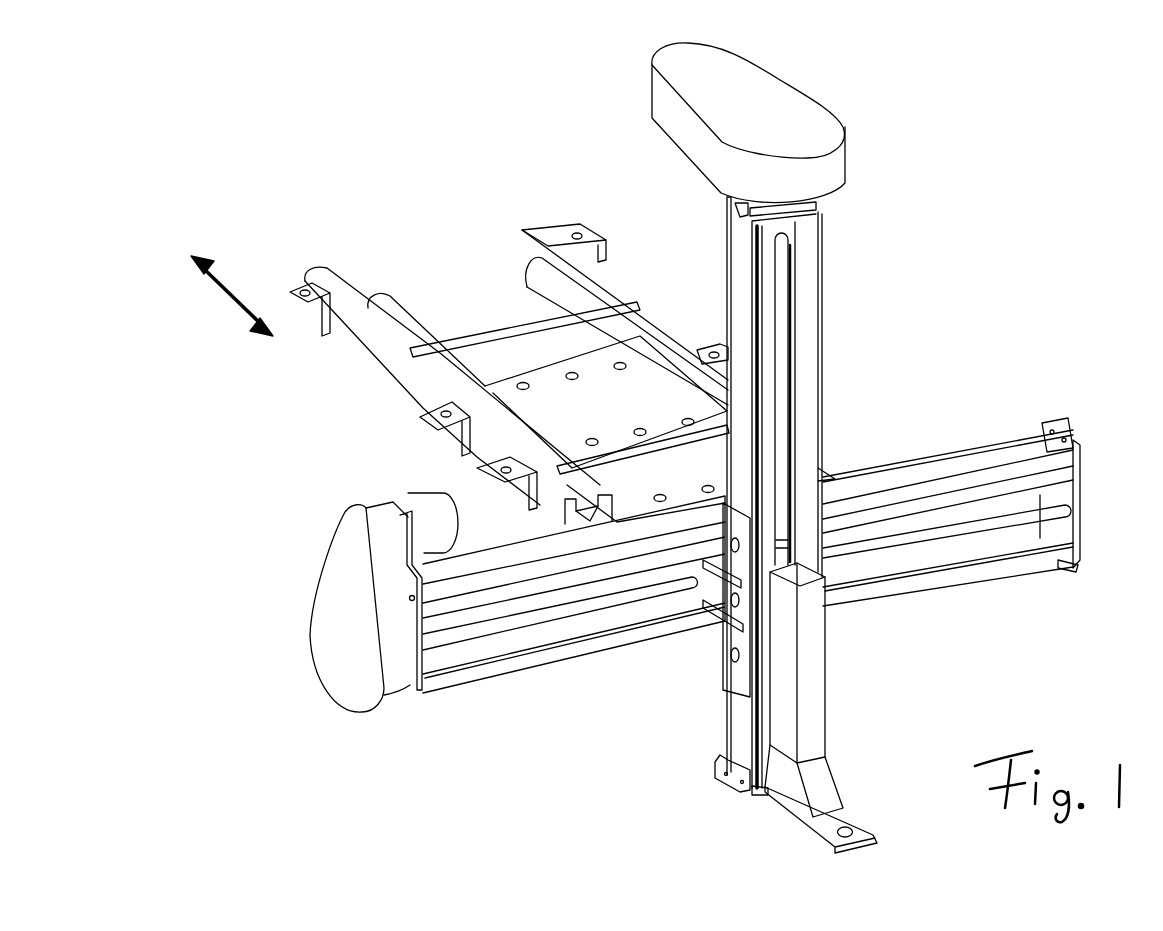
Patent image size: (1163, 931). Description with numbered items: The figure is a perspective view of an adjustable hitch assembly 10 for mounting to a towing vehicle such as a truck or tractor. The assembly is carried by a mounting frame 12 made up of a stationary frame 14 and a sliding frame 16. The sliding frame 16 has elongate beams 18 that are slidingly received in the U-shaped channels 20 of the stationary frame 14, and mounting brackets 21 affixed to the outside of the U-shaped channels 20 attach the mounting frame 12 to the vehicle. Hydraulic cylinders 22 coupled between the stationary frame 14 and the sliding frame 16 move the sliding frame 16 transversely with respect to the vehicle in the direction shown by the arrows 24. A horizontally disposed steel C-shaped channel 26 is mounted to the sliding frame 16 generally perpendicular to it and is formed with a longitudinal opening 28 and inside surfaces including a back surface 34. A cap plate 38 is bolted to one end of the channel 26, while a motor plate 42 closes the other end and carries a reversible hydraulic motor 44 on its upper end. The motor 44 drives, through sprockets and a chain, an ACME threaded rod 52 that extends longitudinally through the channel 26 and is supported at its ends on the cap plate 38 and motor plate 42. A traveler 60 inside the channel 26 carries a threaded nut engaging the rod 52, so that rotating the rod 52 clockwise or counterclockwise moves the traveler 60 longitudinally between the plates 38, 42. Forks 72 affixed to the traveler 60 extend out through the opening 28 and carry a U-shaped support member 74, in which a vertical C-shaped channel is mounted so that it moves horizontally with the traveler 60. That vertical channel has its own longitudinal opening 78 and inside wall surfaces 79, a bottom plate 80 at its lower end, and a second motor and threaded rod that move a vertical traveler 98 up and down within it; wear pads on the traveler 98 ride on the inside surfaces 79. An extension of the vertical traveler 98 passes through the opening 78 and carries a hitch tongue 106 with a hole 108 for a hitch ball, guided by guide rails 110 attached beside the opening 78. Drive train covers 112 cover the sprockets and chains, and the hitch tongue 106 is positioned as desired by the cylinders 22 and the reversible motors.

The hitch assembly 10 is at (985, 270).
The mounting frame 12 is at (336, 370).
The stationary frame 14 is at (320, 260).
The sliding frame 16 is at (642, 375).
The elongate beams 18 is at (568, 512).
The U-shaped channels 20 is at (400, 372).
The mounting brackets 21 is at (292, 297).
The hydraulic cylinders 22 is at (390, 313).
The arrows 24 is at (232, 296).
The C-shaped channel 26 is at (905, 472).
The longitudinal opening 28 is at (622, 628).
The back surface 34 is at (988, 543).
The cap plate 38 is at (1070, 520).
The motor plate 42 is at (426, 692).
The reversible hydraulic motor 44 is at (440, 526).
The threaded rod 52 is at (490, 625).
The traveler 60 is at (684, 620).
The forks 72 is at (718, 588).
The U-shaped support member 74 is at (755, 722).
The longitudinal opening 78 is at (796, 289).
The inside wall surfaces 79 is at (780, 337).
The bottom plate 80 is at (750, 792).
The vertical traveler 98 is at (797, 530).
The hitch tongue 106 is at (815, 710).
The hole 108 is at (852, 827).
The guide rails 110 is at (815, 365).
The drive train covers 112 is at (775, 100).